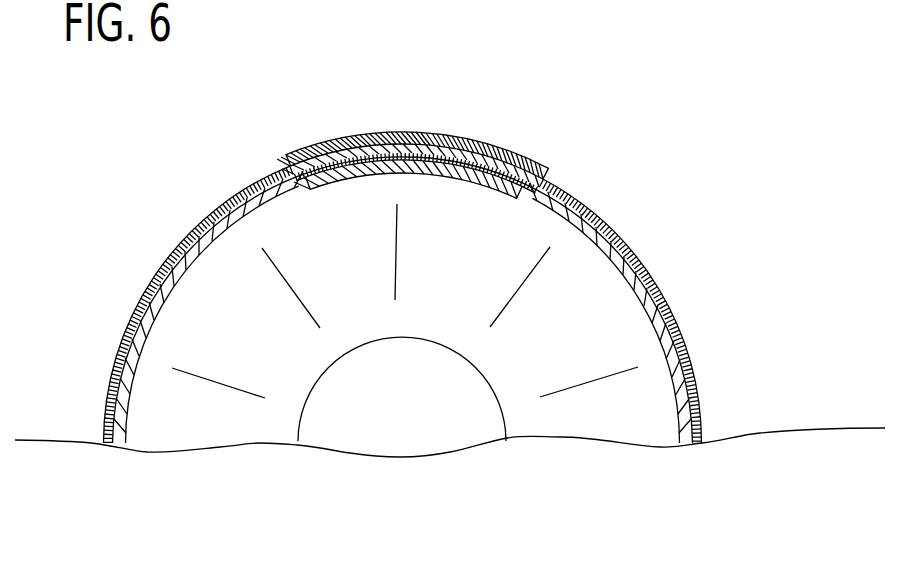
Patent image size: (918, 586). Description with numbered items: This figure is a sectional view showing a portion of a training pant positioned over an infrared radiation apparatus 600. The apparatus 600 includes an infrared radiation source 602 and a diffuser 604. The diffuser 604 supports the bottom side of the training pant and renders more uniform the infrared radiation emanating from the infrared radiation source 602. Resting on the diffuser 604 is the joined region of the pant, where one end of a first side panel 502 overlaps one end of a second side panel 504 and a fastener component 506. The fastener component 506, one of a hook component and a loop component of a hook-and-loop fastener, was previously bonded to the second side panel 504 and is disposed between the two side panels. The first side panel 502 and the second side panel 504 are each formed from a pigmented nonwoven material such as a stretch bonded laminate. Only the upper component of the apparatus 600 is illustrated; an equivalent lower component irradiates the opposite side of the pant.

The infrared radiation apparatus 600 is at (553, 500).
The infrared radiation source 602 is at (420, 426).
The first side panel 502 is at (423, 132).
The second side panel 504 is at (563, 190).
The fastener component 506 is at (290, 160).
The diffuser 604 is at (447, 176).